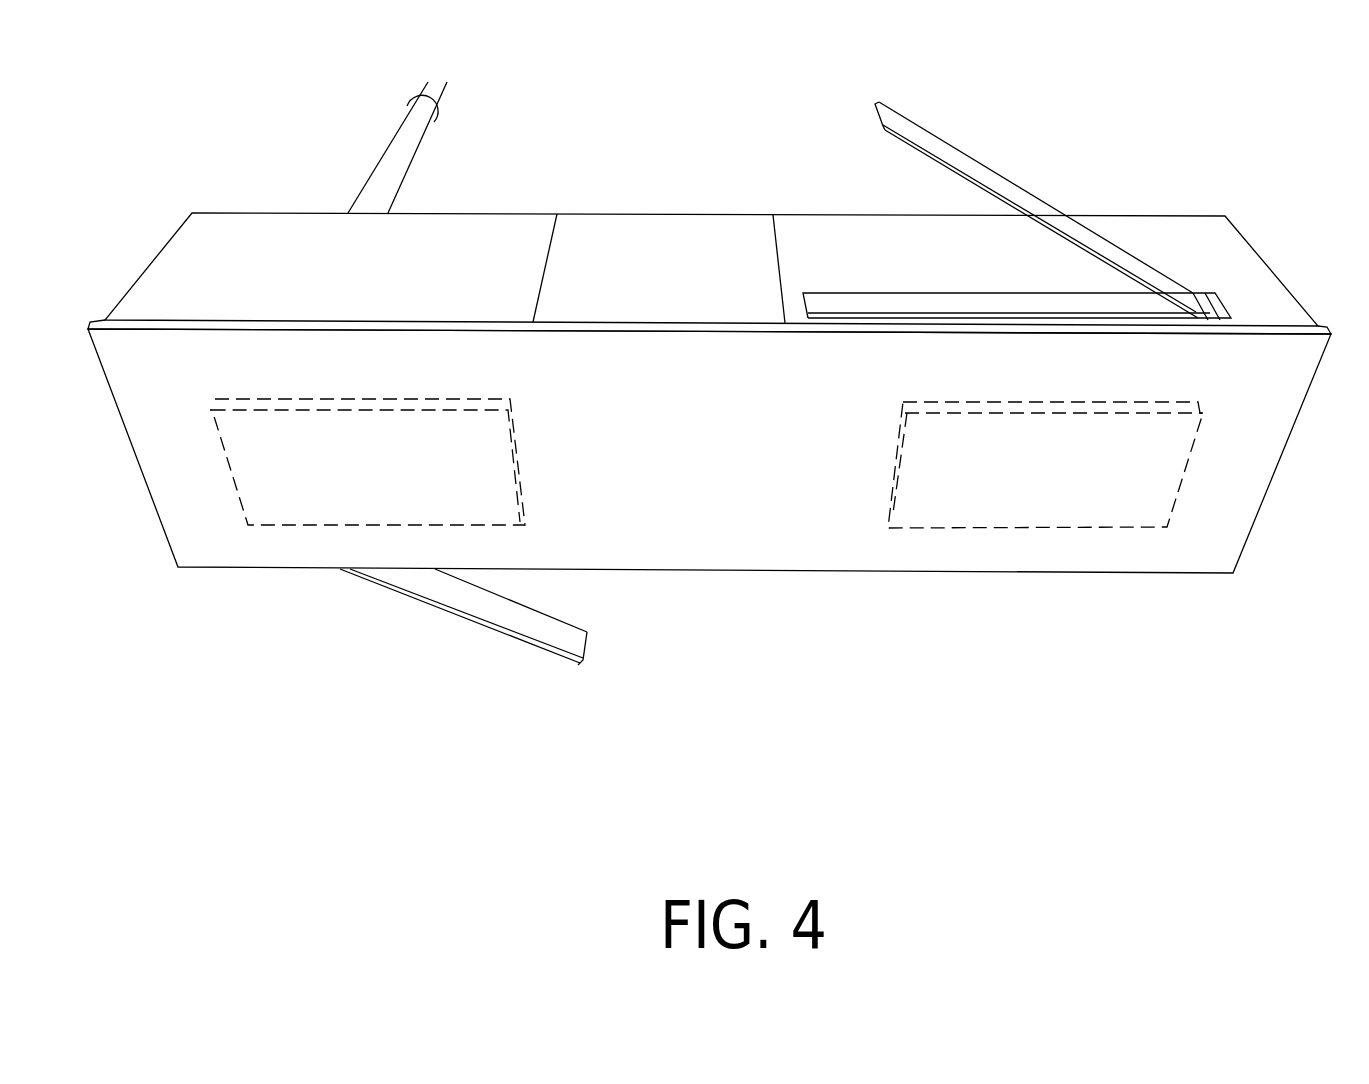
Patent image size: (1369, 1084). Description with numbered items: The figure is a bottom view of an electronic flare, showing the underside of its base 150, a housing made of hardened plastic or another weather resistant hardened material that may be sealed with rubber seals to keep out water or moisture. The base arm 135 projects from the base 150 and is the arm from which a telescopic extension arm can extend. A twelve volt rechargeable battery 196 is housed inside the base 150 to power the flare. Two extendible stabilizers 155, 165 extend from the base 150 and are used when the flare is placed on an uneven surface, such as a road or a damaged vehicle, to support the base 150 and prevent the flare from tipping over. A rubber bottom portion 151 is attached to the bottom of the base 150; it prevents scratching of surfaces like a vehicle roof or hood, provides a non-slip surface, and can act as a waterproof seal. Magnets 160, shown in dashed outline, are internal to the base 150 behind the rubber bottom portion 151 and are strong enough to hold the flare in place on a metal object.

The base arm 135 is at (447, 147).
The base 150 is at (709, 354).
The rubber bottom portion 151 is at (709, 236).
The extendible stabilizer 155 is at (1017, 204).
The magnets 160 is at (706, 517).
The extendible stabilizer 165 is at (526, 635).
The rechargeable battery 196 is at (669, 204).